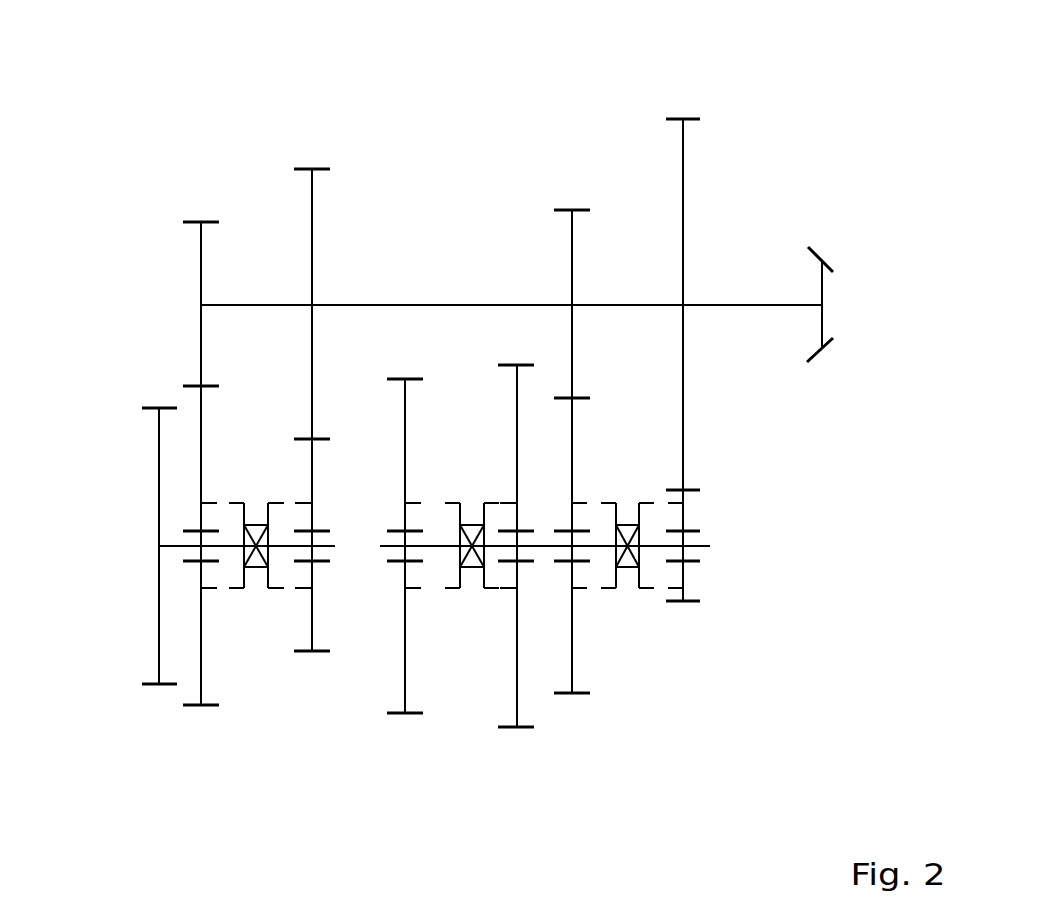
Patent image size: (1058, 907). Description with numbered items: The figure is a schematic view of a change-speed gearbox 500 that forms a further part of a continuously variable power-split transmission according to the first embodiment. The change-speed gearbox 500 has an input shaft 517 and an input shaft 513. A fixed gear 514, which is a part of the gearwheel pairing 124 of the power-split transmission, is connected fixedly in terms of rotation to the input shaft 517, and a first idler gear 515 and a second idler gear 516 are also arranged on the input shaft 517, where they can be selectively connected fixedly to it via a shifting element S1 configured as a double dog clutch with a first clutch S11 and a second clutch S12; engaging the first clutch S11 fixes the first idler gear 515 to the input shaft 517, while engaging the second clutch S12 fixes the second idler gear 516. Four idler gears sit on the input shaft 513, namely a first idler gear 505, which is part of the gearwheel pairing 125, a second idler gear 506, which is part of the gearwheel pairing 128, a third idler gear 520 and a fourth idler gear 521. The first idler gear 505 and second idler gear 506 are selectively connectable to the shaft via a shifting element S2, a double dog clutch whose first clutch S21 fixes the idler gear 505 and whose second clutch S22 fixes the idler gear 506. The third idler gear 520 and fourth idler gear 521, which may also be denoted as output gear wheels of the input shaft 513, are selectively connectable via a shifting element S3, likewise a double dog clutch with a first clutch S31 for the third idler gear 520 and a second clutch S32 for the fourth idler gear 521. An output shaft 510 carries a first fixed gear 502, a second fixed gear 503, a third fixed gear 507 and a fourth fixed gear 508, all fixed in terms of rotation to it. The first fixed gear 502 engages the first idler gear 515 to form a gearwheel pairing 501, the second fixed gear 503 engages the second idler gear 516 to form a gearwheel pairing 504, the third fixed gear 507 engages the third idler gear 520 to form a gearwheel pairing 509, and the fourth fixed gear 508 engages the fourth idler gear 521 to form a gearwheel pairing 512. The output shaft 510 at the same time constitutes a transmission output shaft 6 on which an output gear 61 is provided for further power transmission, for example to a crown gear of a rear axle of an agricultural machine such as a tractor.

The change-speed gearbox 500 is at (773, 150).
The first fixed gear 502 is at (201, 262).
The gearwheel pairing 501 is at (194, 385).
The second fixed gear 503 is at (312, 253).
The gearwheel pairing 504 is at (320, 437).
The first idler gear 505 is at (405, 443).
The second idler gear 506 is at (517, 447).
The third fixed gear 507 is at (572, 263).
The gearwheel pairing 509 is at (573, 390).
The fourth fixed gear 508 is at (683, 233).
The output shaft 510 is at (727, 305).
The output gear 61 is at (822, 289).
The transmission output shaft 6 is at (695, 308).
The gearwheel pairing 512 is at (698, 483).
The input shaft 513 is at (703, 545).
The fourth idler gear 521 is at (683, 578).
The shifting element S1 is at (255, 502).
The first clutch S11 is at (227, 593).
The second clutch S12 is at (287, 593).
The fixed gear 514 is at (159, 578).
The gearwheel pairing 124 is at (157, 692).
The first idler gear 515 is at (202, 668).
The second idler gear 516 is at (312, 610).
The input shaft 517 is at (335, 548).
The first clutch S21 is at (432, 597).
The gearwheel pairing 125 is at (404, 718).
The shifting element S2 is at (470, 595).
The second clutch S22 is at (488, 595).
The gearwheel pairing 128 is at (517, 733).
The third idler gear 520 is at (572, 628).
The first clutch S31 is at (598, 609).
The second clutch S32 is at (658, 609).
The shifting element S3 is at (629, 497).